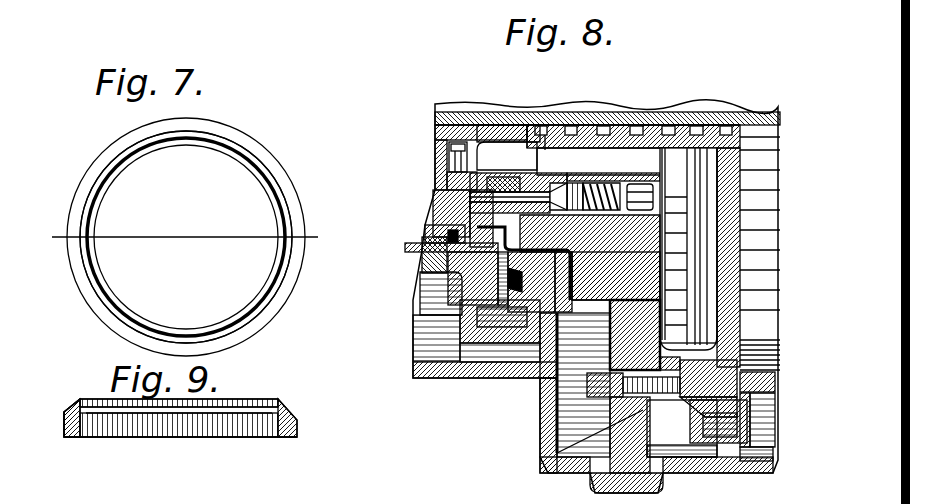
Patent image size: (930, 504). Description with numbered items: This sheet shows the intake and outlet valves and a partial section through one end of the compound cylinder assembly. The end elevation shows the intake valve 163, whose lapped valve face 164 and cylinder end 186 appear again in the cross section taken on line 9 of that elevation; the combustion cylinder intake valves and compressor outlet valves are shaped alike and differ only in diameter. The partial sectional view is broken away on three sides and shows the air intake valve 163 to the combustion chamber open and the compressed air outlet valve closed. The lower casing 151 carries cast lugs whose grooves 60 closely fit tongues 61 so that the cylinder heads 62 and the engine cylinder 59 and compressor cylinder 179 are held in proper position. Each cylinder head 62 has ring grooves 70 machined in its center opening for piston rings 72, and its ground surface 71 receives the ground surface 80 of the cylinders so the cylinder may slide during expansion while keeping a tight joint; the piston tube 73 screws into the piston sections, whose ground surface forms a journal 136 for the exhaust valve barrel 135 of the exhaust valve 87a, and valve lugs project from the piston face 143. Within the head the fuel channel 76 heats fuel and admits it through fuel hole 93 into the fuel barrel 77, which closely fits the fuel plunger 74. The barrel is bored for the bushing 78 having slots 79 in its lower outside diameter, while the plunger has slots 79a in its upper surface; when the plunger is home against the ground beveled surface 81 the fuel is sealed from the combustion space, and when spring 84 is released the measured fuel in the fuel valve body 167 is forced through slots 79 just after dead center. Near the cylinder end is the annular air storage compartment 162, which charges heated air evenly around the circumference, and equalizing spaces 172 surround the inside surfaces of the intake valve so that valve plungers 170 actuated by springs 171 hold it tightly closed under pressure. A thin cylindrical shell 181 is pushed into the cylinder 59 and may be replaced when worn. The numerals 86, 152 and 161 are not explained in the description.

In FIG. 7, the section line 9— 9 is at (183, 239).
In FIG. 8, the engine cylinder 59 is at (427, 262).
In FIG. 8, the groove 60 is at (655, 478).
In FIG. 8, the tongue 61 is at (600, 473).
In FIG. 8, the cylinder head 62 is at (590, 257).
In FIG. 8, the ring groove 70 is at (737, 90).
In FIG. 8, the ground surface 71 is at (600, 282).
In FIG. 8, the piston ring 72 is at (666, 125).
In FIG. 8, the piston tube 73 is at (620, 113).
In FIG. 8, the fuel plunger 74 is at (520, 172).
In FIG. 8, the fuel channel 76 is at (653, 200).
In FIG. 8, the fuel barrel 77 is at (625, 161).
In FIG. 8, the bushing 78 is at (526, 209).
In FIG. 8, the slot 79 is at (532, 263).
In FIG. 8, the slot 79a is at (587, 160).
In FIG. 8, the ground surface 80 is at (588, 378).
In FIG. 8, the ground beveled surface 81 is at (507, 156).
In FIG. 8, the spring 84 is at (663, 162).
In FIG. 8, the screw 86 is at (440, 196).
In FIG. 8, the exhaust valve 87a is at (437, 174).
In FIG. 8, the fuel hole 93 is at (653, 192).
In FIG. 8, the exhaust valve barrel 135 is at (490, 123).
In FIG. 8, the journal 136 is at (476, 116).
In FIG. 8, the piston face 143 is at (450, 223).
In FIG. 8, the lower casing 151 is at (540, 440).
In FIG. 8, the insert 152 is at (458, 240).
In FIG. 8, the screw 161 is at (757, 372).
In FIG. 8, the annular air storage compartment 162 is at (414, 320).
In FIG. 7, the intake valve 163 is at (117, 175).
In FIG. 9, the intake valve 163 is at (64, 418).
In FIG. 8, the intake valve 163 is at (525, 378).
In FIG. 9, the face of the valve 164 is at (278, 403).
In FIG. 8, the face of the valve 164 is at (473, 278).
In FIG. 8, the fuel valve body 167 is at (553, 135).
In FIG. 8, the valve plunger 170 is at (698, 373).
In FIG. 8, the spring 171 is at (583, 385).
In FIG. 8, the equalizing space 172 is at (640, 282).
In FIG. 8, the compressor cylinder 179 is at (748, 299).
In FIG. 8, the thin cylindrical shell 181 is at (413, 284).
In FIG. 7, the end of cylinder 186 is at (258, 317).
In FIG. 9, the end of cylinder 186 is at (66, 440).
In FIG. 8, the end of cylinder 186 is at (530, 462).